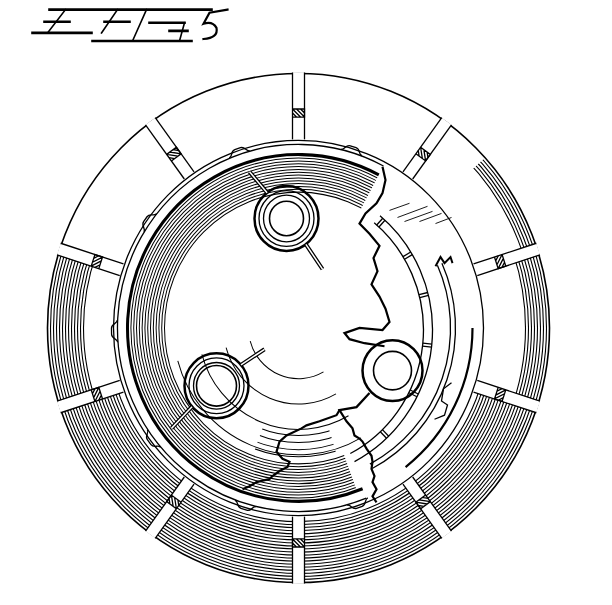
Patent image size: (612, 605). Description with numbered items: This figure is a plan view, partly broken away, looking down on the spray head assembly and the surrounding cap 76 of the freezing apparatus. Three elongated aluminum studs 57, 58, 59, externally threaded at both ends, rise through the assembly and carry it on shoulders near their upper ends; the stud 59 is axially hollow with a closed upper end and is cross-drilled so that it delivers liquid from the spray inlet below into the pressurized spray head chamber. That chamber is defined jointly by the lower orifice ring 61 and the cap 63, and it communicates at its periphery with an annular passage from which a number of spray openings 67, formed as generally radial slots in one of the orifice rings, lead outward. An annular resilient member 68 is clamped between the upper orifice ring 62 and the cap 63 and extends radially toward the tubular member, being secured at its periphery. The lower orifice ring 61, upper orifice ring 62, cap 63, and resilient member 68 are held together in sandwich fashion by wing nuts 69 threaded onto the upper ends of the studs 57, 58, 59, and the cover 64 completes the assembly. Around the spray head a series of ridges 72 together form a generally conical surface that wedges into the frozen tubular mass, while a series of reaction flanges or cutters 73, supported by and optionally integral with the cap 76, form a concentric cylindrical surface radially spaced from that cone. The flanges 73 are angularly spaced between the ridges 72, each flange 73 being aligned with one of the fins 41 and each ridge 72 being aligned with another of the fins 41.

The fins 41 is at (447, 432).
The elongated stud 57 is at (287, 218).
The elongated stud 58 is at (393, 370).
The elongated stud 59 is at (217, 385).
The lower orifice ring 61 is at (378, 256).
The upper orifice ring 62 is at (452, 302).
The cap 63 is at (247, 297).
The cover 64 is at (277, 467).
The spray openings 67 is at (440, 348).
The annular resilient member 68 is at (450, 243).
The wing nuts 69 is at (265, 352).
The ridges 72 is at (243, 507).
The reaction flanges or cutters 73 is at (416, 507).
The cap 76 is at (487, 176).